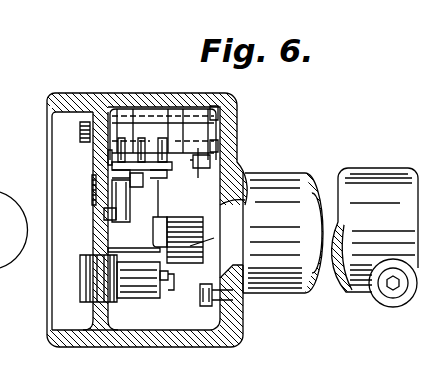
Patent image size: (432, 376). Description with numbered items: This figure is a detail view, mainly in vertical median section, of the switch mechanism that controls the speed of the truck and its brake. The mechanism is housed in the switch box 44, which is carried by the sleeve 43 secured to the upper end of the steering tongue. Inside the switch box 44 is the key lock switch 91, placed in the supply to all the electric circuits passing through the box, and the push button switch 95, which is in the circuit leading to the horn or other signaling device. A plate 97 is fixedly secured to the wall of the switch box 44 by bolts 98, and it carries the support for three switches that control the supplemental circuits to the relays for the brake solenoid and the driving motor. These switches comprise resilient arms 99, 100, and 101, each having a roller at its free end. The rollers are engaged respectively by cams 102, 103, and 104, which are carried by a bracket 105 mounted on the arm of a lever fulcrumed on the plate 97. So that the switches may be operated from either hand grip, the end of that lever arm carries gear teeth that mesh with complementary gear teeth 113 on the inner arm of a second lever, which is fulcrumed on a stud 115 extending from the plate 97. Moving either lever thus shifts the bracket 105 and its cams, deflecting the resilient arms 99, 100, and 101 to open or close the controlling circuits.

The sleeve 43 is at (302, 258).
The switch box 44 is at (240, 112).
The key lock switch 91 is at (80, 283).
The push button switch 95 is at (93, 183).
The plate 97 is at (241, 186).
The bolts 98 is at (220, 160).
The resilient arm 99 is at (110, 157).
The resilient arm 100 is at (141, 108).
The resilient arm 101 is at (177, 134).
The cam 102 is at (105, 218).
The cam 103 is at (133, 186).
The cam 104 is at (163, 167).
The bracket 105 is at (164, 205).
The gear teeth 113 is at (212, 240).
The stud 115 is at (108, 249).